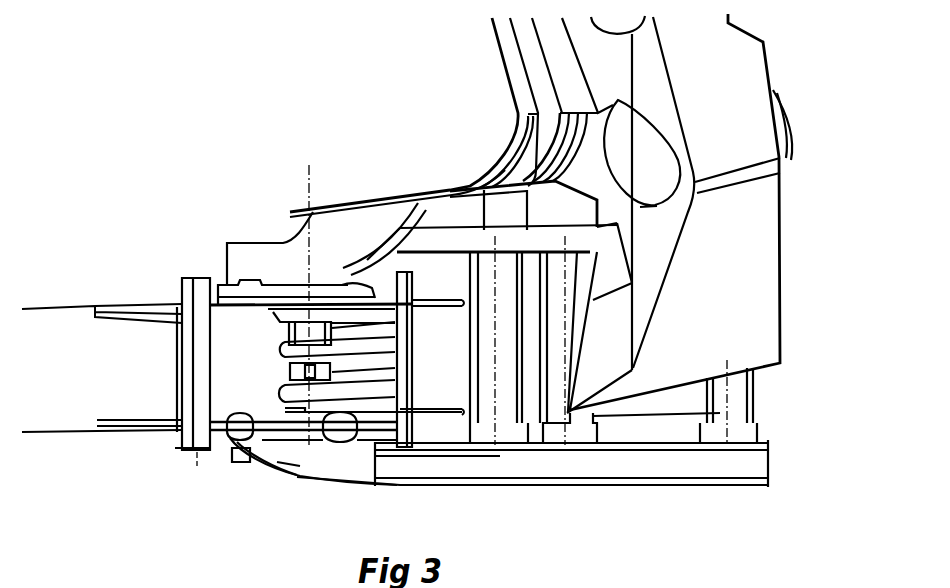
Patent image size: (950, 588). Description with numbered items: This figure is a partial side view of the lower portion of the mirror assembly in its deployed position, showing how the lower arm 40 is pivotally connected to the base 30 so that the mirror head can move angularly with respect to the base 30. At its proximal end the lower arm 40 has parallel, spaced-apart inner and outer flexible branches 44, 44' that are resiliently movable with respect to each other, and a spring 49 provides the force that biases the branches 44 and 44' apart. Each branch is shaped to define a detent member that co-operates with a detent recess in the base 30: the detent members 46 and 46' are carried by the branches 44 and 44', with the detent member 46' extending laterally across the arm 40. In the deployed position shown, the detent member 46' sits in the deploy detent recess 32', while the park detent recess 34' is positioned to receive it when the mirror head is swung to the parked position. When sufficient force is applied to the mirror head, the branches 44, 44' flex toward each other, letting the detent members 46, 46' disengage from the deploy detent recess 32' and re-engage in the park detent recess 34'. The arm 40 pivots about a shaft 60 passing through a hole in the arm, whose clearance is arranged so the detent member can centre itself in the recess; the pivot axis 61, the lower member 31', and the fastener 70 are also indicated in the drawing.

The base 30 is at (780, 273).
The base plate 31' is at (532, 386).
The deploy detent recess 32' is at (334, 474).
The park detent recess 34' is at (289, 468).
The lower arm 40 is at (70, 432).
The inner flexible branch 44 is at (306, 244).
The outer flexible branch 44' is at (292, 485).
The detent member 46 is at (384, 304).
The detent member 46' is at (387, 484).
The spring 49 is at (288, 366).
The shaft 60 is at (270, 343).
The axis 61 is at (309, 172).
The fastening bolt 70 is at (193, 278).